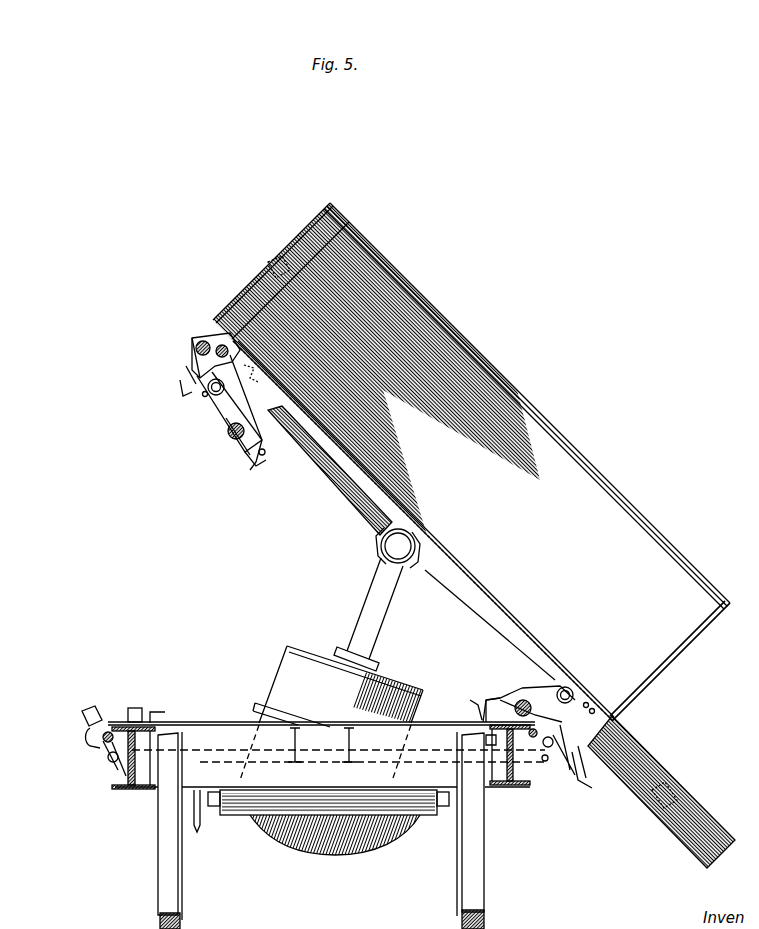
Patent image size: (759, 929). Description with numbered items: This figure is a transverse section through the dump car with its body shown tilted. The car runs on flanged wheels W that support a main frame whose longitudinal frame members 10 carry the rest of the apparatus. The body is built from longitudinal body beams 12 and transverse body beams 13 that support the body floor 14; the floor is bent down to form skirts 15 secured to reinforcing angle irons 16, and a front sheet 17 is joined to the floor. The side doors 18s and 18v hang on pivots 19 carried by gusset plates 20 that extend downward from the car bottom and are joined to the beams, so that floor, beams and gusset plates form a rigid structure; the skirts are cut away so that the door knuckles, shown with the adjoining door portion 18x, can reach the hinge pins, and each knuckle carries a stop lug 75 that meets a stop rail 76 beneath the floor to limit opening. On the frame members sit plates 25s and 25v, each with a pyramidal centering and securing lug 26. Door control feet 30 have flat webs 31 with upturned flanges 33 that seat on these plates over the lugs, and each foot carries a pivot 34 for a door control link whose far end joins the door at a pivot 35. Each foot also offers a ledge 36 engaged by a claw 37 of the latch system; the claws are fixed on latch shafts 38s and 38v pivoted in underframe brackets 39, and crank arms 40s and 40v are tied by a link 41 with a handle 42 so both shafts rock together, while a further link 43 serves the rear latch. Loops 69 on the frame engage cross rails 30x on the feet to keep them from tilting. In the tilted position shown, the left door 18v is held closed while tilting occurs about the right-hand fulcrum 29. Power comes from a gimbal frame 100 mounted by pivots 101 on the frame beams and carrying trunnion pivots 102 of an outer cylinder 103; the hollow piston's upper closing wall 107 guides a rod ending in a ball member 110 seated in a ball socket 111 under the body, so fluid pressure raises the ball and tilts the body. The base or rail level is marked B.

The longitudinal frame member 10 is at (140, 793).
The longitudinal body beam 12 is at (290, 408).
The transverse body beam 13 is at (478, 608).
The body floor 14 is at (466, 573).
The skirt 15 is at (188, 370).
The reinforcing angle iron 16 is at (184, 378).
The front sheet 17 is at (530, 404).
The side door 18v is at (303, 237).
The side door 18s is at (660, 792).
The board 18x is at (192, 349).
The pivot 19 is at (218, 331).
The gusset plate 20 is at (280, 407).
The plate 25v is at (152, 722).
The plate 25s is at (487, 716).
The centering and securing lug 26 is at (137, 708).
The fulcrum 29 is at (240, 452).
The door control foot 30 is at (220, 422).
The cross rail 30x is at (225, 408).
The flat web 31 is at (263, 457).
The upturned flange 33 is at (252, 462).
The pivot 34 is at (210, 391).
The pivot 35 is at (199, 343).
The ledge 36 is at (231, 438).
The claw 37 is at (84, 742).
The latch shaft 38v is at (110, 730).
The latch shaft 38s is at (533, 738).
The underframe bracket 39 is at (118, 778).
The crank arm 40v is at (107, 756).
The crank arm 40s is at (527, 762).
The link 41 is at (232, 760).
The handle 42 is at (197, 832).
The link 43 is at (108, 763).
The loop 69 is at (84, 715).
The stop lug 75 is at (203, 393).
The stop rail 76 is at (262, 387).
The gimbal frame 100 is at (382, 817).
The pivot 101 is at (213, 810).
The trunnion pivot 102 is at (290, 833).
The outer cylinder 103 is at (325, 843).
The upper closing wall 107 is at (318, 648).
The ball member 110 is at (420, 518).
The ball socket 111 is at (432, 537).
The flanged wheel W is at (157, 858).
The base B is at (158, 924).